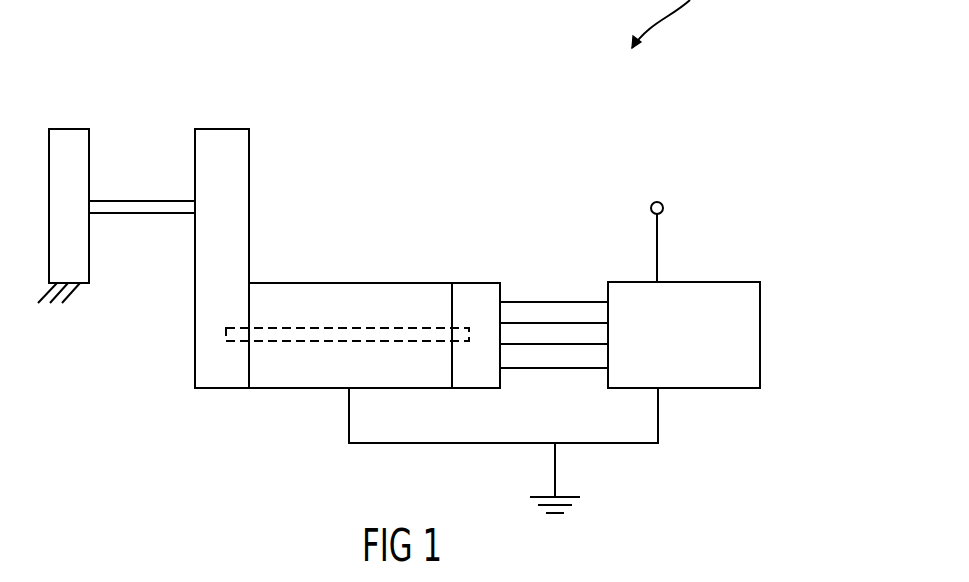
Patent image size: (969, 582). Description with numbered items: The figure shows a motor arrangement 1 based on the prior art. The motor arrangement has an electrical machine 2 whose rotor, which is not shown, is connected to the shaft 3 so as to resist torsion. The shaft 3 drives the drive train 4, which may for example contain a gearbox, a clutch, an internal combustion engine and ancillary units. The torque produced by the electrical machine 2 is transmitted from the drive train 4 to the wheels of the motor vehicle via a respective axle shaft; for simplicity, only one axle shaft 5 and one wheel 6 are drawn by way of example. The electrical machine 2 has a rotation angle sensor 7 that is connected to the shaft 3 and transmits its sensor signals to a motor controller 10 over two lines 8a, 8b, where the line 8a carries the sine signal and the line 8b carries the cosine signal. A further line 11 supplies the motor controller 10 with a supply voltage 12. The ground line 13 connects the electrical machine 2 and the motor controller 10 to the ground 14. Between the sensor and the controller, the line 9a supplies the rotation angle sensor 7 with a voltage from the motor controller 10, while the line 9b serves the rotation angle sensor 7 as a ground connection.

The motor arrangement 1 is at (675, 24).
The electrical machine 2 is at (350, 284).
The shaft 3 is at (298, 338).
The drive train 4 is at (240, 153).
The axle shaft 5 is at (120, 200).
The wheel 6 is at (70, 140).
The rotation angle sensor 7 is at (495, 288).
The line 8a is at (583, 322).
The line 8b is at (542, 370).
The line 9a is at (547, 300).
The line 9b is at (584, 370).
The motor controller 10 is at (750, 305).
The line 11 is at (658, 258).
The supply voltage 12 is at (664, 206).
The ground line 13 is at (658, 420).
The ground 14 is at (575, 500).